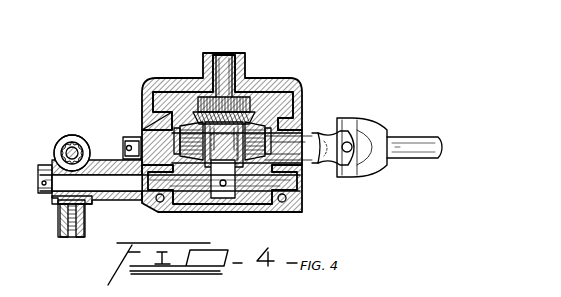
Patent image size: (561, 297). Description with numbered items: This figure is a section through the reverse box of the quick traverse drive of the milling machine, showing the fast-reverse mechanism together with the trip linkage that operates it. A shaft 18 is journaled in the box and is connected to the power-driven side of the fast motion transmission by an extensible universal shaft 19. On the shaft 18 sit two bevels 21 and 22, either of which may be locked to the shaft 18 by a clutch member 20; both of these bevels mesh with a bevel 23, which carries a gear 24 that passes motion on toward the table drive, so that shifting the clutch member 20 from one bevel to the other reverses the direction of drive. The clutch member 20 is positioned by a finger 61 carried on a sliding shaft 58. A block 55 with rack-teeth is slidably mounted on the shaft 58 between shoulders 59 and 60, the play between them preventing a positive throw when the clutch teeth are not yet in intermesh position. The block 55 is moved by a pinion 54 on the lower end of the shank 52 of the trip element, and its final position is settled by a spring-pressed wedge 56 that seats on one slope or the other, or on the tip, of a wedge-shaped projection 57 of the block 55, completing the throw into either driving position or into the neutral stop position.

The shaft 18 is at (242, 148).
The extensible universal shaft 19 is at (420, 138).
The clutch member 20 is at (224, 144).
The bevel 21 is at (190, 120).
The bevel 22 is at (263, 168).
The bevel 23 is at (253, 119).
The gear 24 is at (250, 105).
The shank 52 is at (83, 139).
The pinion 54 is at (62, 143).
The block 55 is at (97, 200).
The spring-pressed wedge 56 is at (57, 203).
The wedge-shaped projection 57 is at (79, 200).
The sliding shaft 58 is at (190, 190).
The shoulder 59 is at (52, 170).
The shoulder 60 is at (101, 172).
The finger 61 is at (227, 198).